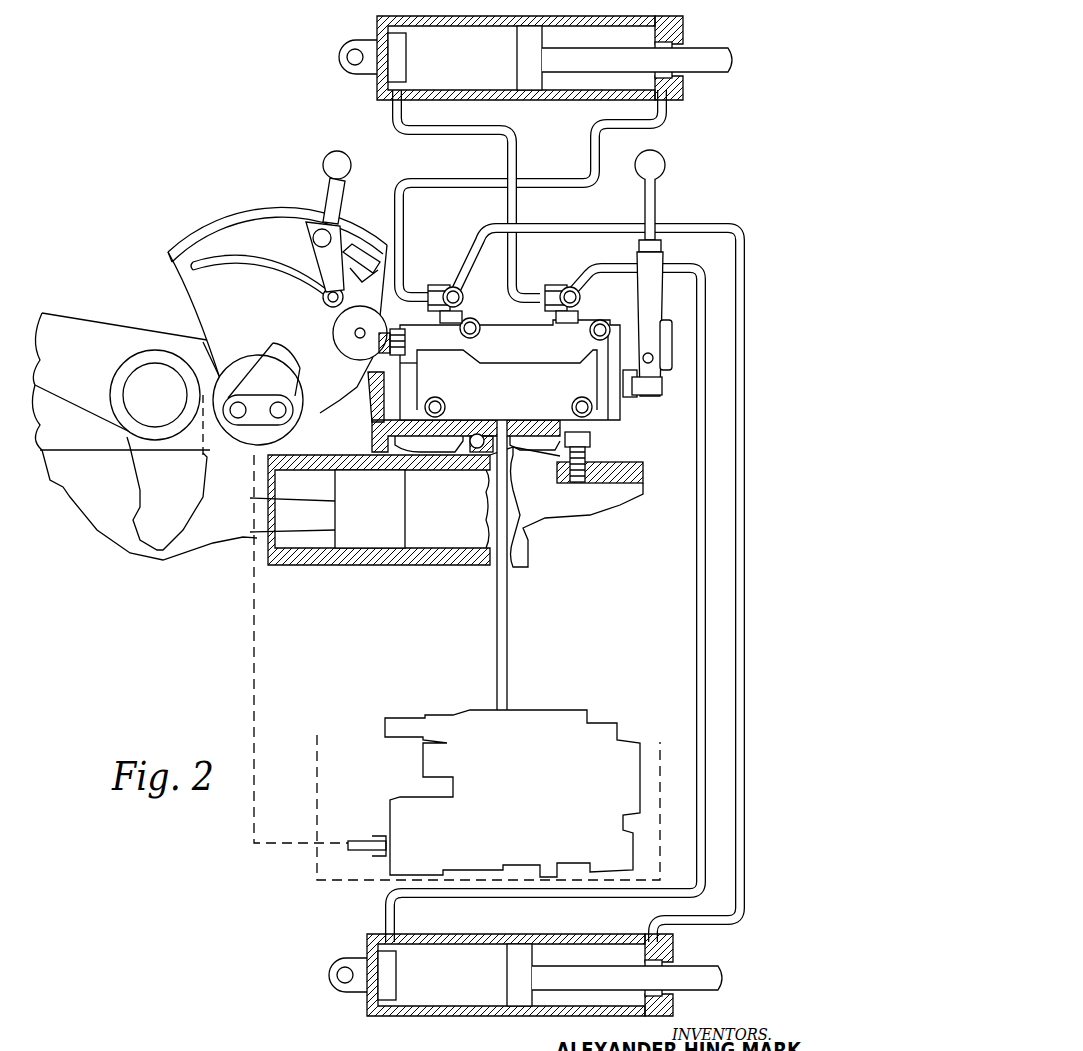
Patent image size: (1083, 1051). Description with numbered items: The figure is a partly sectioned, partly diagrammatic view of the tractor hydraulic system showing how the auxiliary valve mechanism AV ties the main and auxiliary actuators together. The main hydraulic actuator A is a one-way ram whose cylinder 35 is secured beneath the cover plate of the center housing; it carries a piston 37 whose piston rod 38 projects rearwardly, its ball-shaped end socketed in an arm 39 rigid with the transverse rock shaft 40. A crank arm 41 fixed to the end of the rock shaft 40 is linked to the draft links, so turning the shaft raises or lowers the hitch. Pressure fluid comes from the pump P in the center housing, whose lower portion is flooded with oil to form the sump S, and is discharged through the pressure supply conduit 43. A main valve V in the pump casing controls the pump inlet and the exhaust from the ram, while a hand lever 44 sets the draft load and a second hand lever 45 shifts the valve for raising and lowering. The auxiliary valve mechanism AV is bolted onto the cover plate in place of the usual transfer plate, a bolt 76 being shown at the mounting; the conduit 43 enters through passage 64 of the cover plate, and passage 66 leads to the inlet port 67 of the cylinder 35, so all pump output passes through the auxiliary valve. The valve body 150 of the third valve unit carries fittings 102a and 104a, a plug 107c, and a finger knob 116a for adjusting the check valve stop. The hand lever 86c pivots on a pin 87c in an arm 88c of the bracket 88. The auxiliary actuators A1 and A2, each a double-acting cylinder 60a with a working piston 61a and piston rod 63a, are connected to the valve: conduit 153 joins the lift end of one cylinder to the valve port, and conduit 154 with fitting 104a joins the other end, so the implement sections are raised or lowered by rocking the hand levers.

The cylinder 35 is at (385, 565).
The piston 37 is at (385, 525).
The piston rod 38 is at (230, 520).
The arm 39 is at (150, 482).
The rock shaft 40 is at (135, 394).
The crank arm 41 is at (78, 340).
The pressure supply conduit 43 is at (508, 630).
The hand lever 44 is at (356, 243).
The second hand lever 45 is at (324, 165).
The cylinder 60a is at (583, 98).
The working piston 61a is at (540, 45).
The piston rod 63a is at (711, 72).
The passage 64 is at (502, 422).
The passage 66 is at (485, 420).
The inlet port 67 is at (482, 472).
The mounting bolt 76 is at (592, 456).
The hand lever 86c is at (656, 216).
The pin 87c is at (656, 362).
The bracket 88 is at (624, 330).
The bracket arm 88c is at (670, 335).
The fitting 102a is at (445, 286).
The fitting 104a is at (563, 286).
The plug 107c is at (405, 350).
The finger knob 116a is at (388, 333).
The valve body 150 is at (595, 392).
The conduit 153 is at (396, 221).
The conduit 154 is at (516, 214).
The main hydraulic actuator A is at (320, 571).
The auxiliary actuator A1 is at (515, 101).
The auxiliary actuator A2 is at (470, 1016).
The auxiliary valve mechanism AV is at (498, 327).
The pump P is at (556, 727).
The sump S is at (662, 810).
The main valve V is at (378, 838).